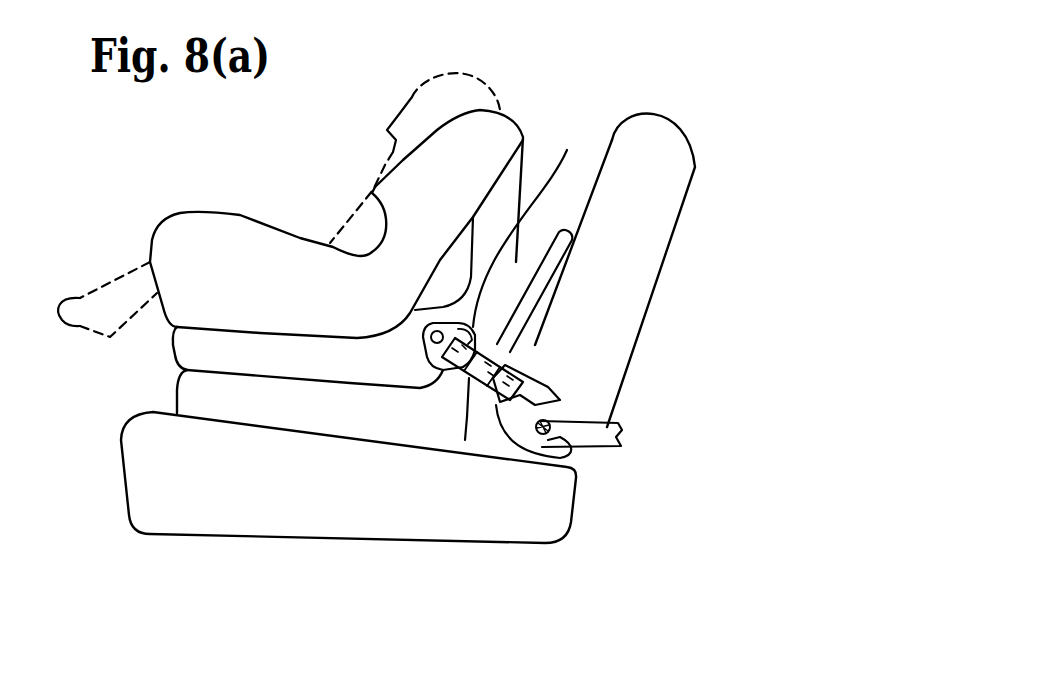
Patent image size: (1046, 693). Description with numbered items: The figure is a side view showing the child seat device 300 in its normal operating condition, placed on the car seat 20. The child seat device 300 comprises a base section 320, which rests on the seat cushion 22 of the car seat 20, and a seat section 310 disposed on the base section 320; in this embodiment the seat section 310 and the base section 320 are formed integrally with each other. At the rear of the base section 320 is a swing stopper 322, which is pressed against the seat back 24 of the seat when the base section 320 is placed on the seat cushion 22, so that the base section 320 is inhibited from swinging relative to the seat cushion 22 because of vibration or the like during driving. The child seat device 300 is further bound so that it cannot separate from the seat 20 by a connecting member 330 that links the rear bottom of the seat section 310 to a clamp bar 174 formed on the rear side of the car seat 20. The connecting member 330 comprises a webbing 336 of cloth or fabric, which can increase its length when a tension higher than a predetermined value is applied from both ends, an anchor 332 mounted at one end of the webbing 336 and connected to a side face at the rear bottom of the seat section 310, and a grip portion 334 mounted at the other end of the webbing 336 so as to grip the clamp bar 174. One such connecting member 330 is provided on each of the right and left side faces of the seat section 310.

The car seat 20 is at (723, 97).
The seat cushion 22 is at (270, 503).
The seat back 24 is at (650, 210).
The clamp bar 174 is at (605, 428).
The child seat device 300 is at (97, 287).
The seat section 310 is at (213, 250).
The base section 320 is at (203, 403).
The swing stopper 322 is at (575, 250).
The connecting member 330 is at (447, 397).
The anchor 332 is at (531, 219).
The grip portion 334 is at (552, 405).
The webbing 336 is at (522, 337).